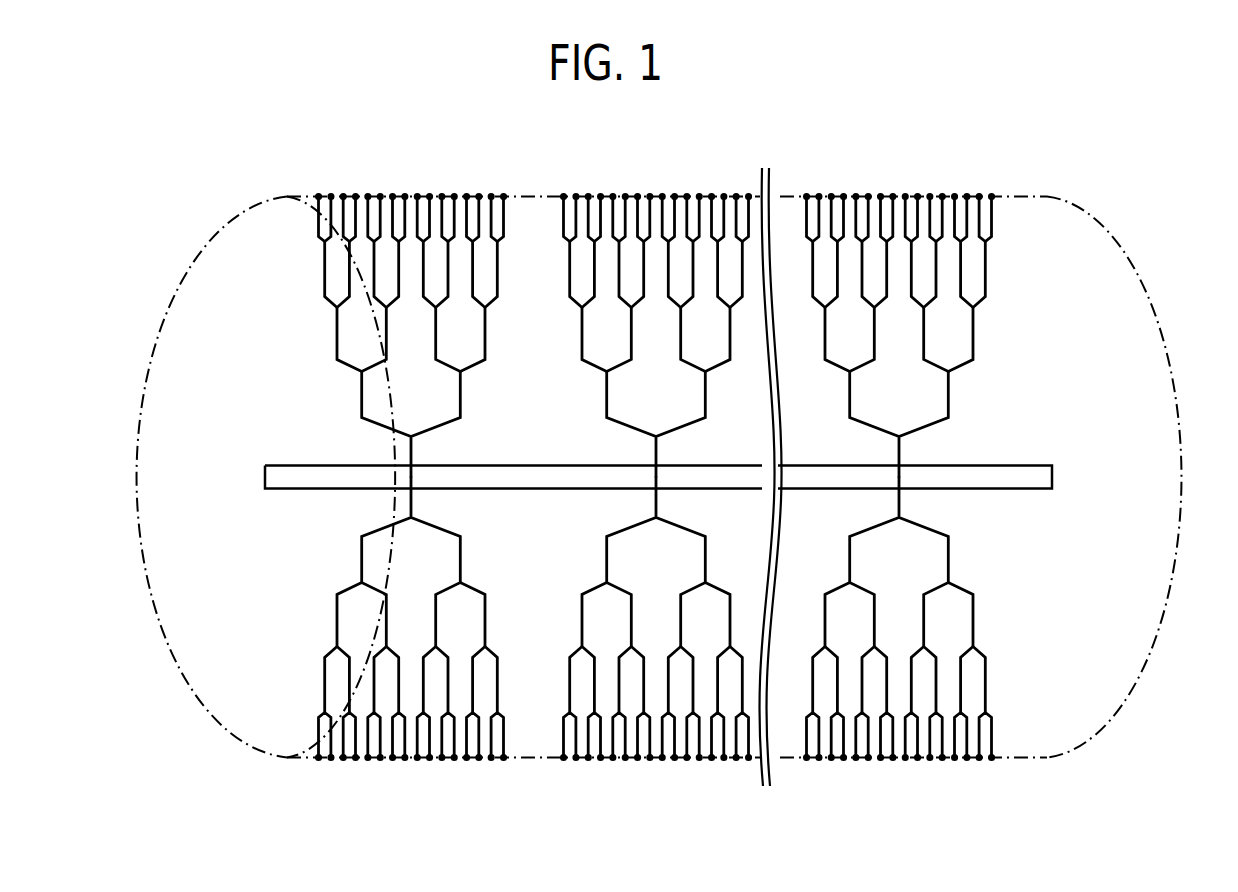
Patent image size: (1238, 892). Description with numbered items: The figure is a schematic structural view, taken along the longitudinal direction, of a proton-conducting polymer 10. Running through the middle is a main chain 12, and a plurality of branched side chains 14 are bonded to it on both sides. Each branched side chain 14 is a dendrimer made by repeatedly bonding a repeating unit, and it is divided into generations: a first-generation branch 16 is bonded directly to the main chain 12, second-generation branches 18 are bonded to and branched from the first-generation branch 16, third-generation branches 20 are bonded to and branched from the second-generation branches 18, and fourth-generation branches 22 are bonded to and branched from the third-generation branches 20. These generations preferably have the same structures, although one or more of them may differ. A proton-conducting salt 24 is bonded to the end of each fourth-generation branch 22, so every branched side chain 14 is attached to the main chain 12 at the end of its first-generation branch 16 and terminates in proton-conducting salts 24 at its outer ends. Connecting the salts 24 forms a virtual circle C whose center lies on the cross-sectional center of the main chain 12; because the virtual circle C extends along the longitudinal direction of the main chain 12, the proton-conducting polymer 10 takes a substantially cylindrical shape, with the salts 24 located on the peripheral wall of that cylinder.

The proton-conducting polymer 10 is at (886, 81).
The main chain 12 is at (1052, 478).
The branched side chain 14 is at (653, 478).
The first-generation branch 16 is at (334, 390).
The second-generation branch 18 is at (323, 307).
The third-generation branch 20 is at (306, 240).
The fourth-generation branch 22 is at (288, 205).
The proton-conducting salt 24 is at (392, 194).
The virtual circle C is at (168, 683).